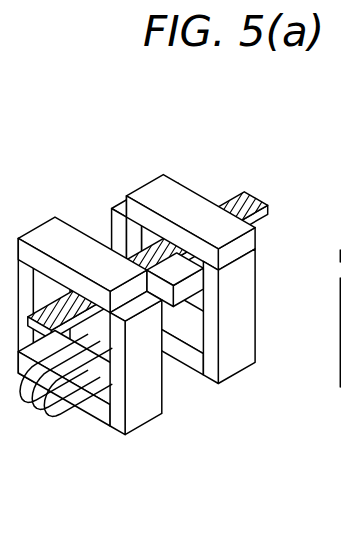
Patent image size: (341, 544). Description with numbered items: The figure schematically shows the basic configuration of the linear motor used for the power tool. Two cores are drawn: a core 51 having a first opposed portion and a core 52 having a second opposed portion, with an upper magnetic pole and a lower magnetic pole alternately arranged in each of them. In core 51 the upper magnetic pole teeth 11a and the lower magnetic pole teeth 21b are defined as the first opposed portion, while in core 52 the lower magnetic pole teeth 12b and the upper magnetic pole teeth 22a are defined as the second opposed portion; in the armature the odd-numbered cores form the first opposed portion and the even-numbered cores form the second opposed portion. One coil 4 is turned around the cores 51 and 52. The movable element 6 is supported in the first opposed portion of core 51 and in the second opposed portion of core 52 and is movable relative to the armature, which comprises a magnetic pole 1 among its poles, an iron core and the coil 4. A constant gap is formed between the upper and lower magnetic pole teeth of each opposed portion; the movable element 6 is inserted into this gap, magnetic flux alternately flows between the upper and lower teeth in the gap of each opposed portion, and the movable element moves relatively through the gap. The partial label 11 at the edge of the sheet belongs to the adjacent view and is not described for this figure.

The magnetic pole 1 is at (340, 346).
The coil 4 is at (43, 418).
The movable element 6 is at (247, 193).
The first core 11 is at (340, 250).
The upper magnetic pole teeth 11a is at (72, 253).
The lower magnetic pole teeth 12b is at (188, 365).
The lower magnetic pole teeth 21b is at (107, 402).
The upper magnetic pole teeth 22a is at (185, 217).
The core having a first opposed portion 51 is at (143, 427).
The core having a second opposed portion 52 is at (243, 368).